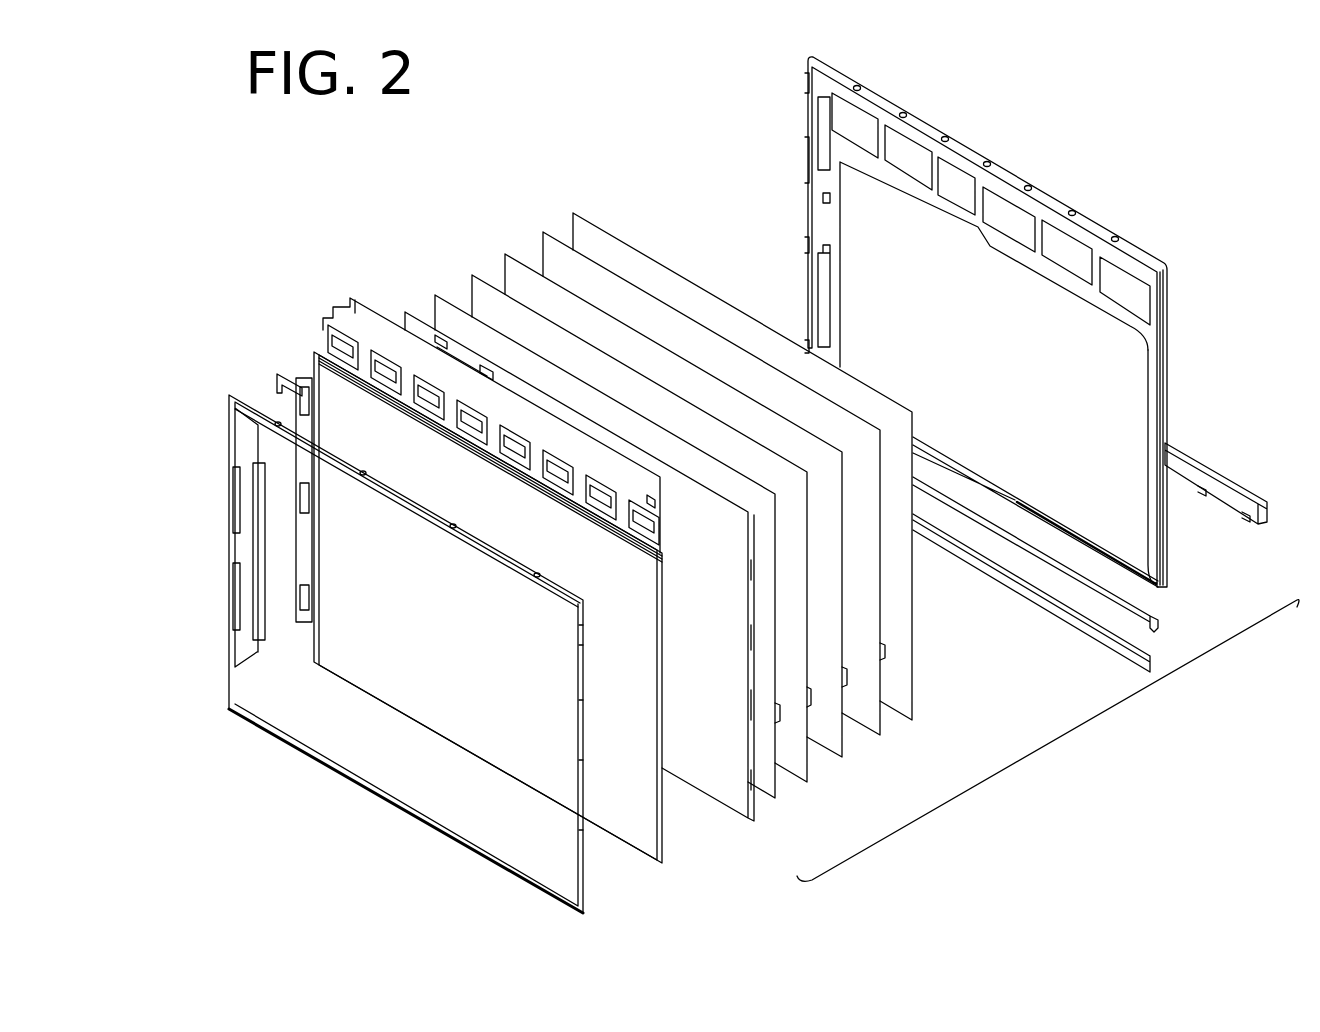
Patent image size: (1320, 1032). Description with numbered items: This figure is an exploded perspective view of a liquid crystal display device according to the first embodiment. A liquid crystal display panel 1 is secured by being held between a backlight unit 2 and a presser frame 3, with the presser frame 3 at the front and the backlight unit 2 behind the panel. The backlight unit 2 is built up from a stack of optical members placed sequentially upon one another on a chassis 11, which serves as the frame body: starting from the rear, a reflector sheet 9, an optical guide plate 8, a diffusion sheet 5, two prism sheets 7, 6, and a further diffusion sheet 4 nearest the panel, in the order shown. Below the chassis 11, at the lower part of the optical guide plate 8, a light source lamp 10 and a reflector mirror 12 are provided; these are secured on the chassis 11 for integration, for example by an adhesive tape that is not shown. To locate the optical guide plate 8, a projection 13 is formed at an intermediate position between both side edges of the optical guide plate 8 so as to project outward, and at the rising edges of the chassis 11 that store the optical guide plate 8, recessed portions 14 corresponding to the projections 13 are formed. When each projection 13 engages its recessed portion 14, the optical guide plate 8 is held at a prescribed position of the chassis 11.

The liquid crystal display panel 1 is at (645, 808).
The backlight unit 2 is at (1048, 469).
The presser frame 3 is at (590, 872).
The diffusion sheet 4 is at (737, 795).
The diffusion sheet 5 is at (833, 732).
The prism sheet 6 is at (767, 777).
The prism sheet 7 is at (797, 760).
The optical guide plate 8 is at (868, 710).
The reflector sheet 9 is at (898, 687).
The light source lamp 10 is at (1123, 597).
The chassis 11 is at (1167, 392).
The reflector mirror 12 is at (1077, 628).
The projection 13 is at (885, 648).
The recessed portion 14 is at (1148, 493).